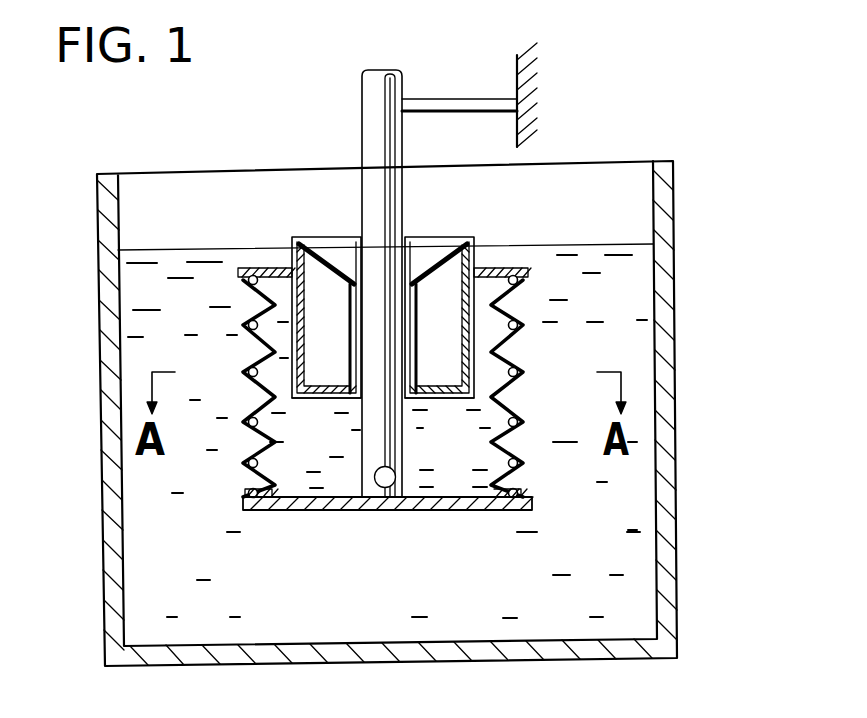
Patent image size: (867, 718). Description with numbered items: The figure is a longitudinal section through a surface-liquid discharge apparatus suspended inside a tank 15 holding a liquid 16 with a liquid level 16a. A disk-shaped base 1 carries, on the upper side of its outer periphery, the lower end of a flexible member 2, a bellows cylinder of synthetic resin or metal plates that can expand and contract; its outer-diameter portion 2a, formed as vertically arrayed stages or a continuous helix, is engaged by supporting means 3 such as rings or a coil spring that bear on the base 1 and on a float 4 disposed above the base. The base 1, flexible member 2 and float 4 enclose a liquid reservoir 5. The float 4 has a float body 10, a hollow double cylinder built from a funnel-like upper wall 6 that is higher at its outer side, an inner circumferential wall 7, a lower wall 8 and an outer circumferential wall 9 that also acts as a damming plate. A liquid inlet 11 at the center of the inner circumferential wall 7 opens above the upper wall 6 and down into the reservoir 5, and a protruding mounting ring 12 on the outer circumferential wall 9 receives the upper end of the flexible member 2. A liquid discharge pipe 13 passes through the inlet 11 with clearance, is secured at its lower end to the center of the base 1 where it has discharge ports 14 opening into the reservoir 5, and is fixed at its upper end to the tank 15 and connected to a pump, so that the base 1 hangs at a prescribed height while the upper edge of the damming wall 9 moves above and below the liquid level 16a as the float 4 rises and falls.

The base 1 is at (473, 509).
The flexible member 2 is at (530, 458).
The outer-diameter portion 2a is at (252, 378).
The supporting means 3 is at (272, 475).
The float 4 is at (258, 274).
The liquid reservoir 5 is at (340, 488).
The upper wall 6 is at (428, 238).
The inner circumferential wall 7 is at (347, 322).
The lower wall 8 is at (450, 398).
The outer circumferential wall 9 is at (480, 244).
The float body 10 is at (523, 281).
The liquid inlet 11 is at (402, 378).
The mounting ring 12 is at (283, 258).
The liquid discharge pipe 13 is at (362, 112).
The discharge port 14 is at (380, 485).
The tank 15 is at (515, 73).
The liquid 16 is at (620, 298).
The liquid level 16a is at (608, 242).